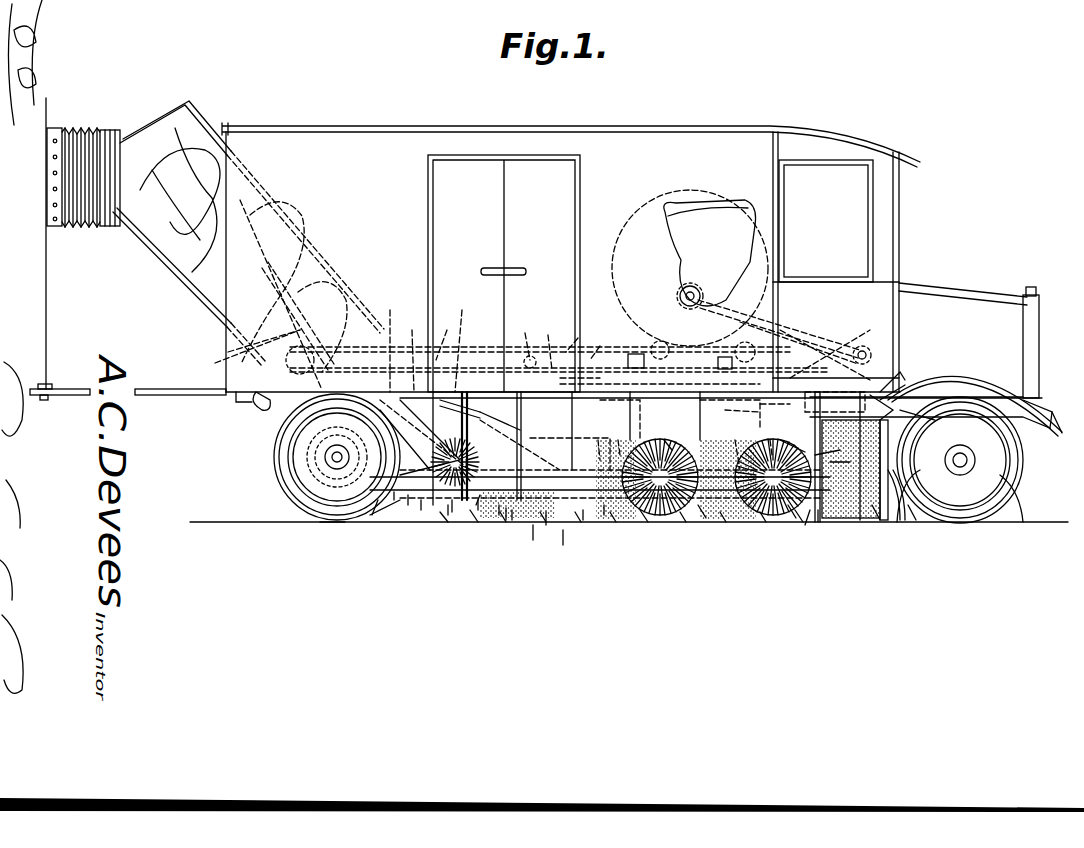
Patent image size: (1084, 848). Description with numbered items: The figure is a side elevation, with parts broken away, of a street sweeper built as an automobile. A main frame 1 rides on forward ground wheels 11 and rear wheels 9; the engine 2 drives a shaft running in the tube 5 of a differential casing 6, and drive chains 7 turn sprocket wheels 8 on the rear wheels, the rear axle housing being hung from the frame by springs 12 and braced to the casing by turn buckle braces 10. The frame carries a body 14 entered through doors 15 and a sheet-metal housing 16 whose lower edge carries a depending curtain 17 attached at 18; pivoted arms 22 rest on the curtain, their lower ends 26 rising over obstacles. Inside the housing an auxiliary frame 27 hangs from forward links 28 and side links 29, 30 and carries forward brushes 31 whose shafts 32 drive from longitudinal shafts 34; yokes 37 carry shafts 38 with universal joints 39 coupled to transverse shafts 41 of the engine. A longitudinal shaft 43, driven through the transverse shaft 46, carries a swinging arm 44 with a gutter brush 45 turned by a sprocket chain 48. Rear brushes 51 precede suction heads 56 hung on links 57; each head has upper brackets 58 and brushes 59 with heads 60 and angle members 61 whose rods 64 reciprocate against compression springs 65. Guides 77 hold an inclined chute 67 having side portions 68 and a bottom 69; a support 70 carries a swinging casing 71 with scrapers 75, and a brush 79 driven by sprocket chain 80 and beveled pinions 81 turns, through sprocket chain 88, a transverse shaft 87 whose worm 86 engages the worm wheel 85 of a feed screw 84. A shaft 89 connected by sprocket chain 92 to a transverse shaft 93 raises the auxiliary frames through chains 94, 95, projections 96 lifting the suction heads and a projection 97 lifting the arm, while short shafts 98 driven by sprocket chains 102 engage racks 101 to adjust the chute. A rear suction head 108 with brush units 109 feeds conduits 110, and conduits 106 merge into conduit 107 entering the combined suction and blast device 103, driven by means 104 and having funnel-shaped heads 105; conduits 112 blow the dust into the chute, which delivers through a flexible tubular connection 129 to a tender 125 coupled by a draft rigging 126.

The main frame 1 is at (246, 402).
The engine 2 is at (900, 362).
The tube 5 is at (765, 405).
The differential casing 6 is at (547, 344).
The drive chains 7 is at (466, 399).
The sprocket wheels 8 is at (302, 485).
The rear wheels 9 is at (292, 470).
The turn buckle braces 10 is at (482, 400).
The forward ground wheels 11 is at (990, 478).
The springs 12 is at (277, 437).
The body 14 is at (627, 152).
The doors 15 is at (455, 182).
The housing 16 is at (906, 512).
The curtain 17 is at (790, 515).
The curtain attachment 18 is at (700, 515).
The arms 22 is at (560, 515).
The lower ends of arms 26 is at (533, 515).
The auxiliary frame 27 is at (733, 446).
The forward links 28 is at (893, 395).
The side links 29 is at (664, 440).
The side links 30 is at (596, 441).
The forward brushes 31 is at (818, 456).
The brush shafts 32 is at (768, 439).
The longitudinal shafts 34 is at (835, 460).
The yokes 37 is at (818, 522).
The shafts 38 is at (930, 397).
The universal joints 39 is at (776, 374).
The transverse shafts 41 is at (918, 372).
The shaft 43 is at (822, 396).
The arm 44 is at (885, 470).
The gutter brush 45 is at (840, 518).
The transverse shaft 46 is at (861, 346).
The sprocket chain 48 is at (805, 525).
The rear brushes 51 is at (604, 515).
The suction heads 56 is at (499, 515).
The links 57 is at (583, 520).
The upper brackets 58 is at (478, 510).
The brushes 59 is at (563, 545).
The heads 60 is at (512, 520).
The angle members 61 is at (506, 520).
The rods 64 is at (546, 525).
The compression springs 65 is at (533, 540).
The chute 67 is at (186, 116).
The side portions 68 is at (452, 512).
The bottom 69 is at (396, 500).
The support 70 is at (408, 505).
The casing 71 is at (421, 510).
The scrapers 75 is at (448, 515).
The guides 77 is at (226, 356).
The brush 79 is at (476, 505).
The sprocket chain 80 is at (524, 342).
The beveled pinions 81 is at (580, 378).
The feed screw 84 is at (172, 236).
The worm wheel 85 is at (375, 520).
The worm 86 is at (410, 352).
The transverse shaft 87 is at (449, 336).
The sprocket chain 88 is at (458, 490).
The shaft 89 is at (730, 356).
The sprocket chain 92 is at (658, 349).
The transverse shaft 93 is at (580, 336).
The chains 94 is at (730, 412).
The chains 95 is at (603, 345).
The projections 96 is at (617, 439).
The projection 97 is at (890, 470).
The short shafts 98 is at (282, 400).
The racks 101 is at (282, 364).
The sprocket chains 102 is at (394, 340).
The combined suction and blast device 103 is at (713, 216).
The operating means 104 is at (700, 293).
The funnel-shaped heads 105 is at (818, 340).
The conduits 106 is at (637, 353).
The conduit 107 is at (782, 322).
The suction head 108 is at (332, 522).
The brush units 109 is at (372, 515).
The conduits 110 is at (397, 341).
The conduits 112 is at (474, 341).
The tender 125 is at (54, 296).
The draft rigging 126 is at (190, 396).
The flexible tubular connection 129 is at (84, 142).